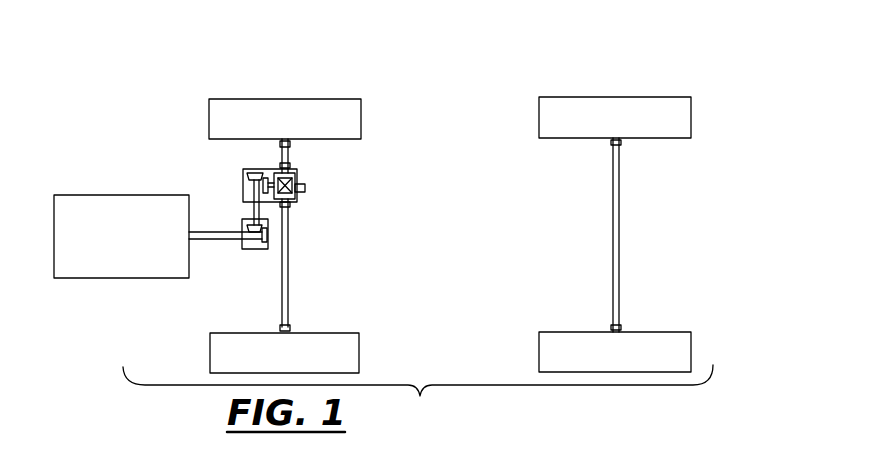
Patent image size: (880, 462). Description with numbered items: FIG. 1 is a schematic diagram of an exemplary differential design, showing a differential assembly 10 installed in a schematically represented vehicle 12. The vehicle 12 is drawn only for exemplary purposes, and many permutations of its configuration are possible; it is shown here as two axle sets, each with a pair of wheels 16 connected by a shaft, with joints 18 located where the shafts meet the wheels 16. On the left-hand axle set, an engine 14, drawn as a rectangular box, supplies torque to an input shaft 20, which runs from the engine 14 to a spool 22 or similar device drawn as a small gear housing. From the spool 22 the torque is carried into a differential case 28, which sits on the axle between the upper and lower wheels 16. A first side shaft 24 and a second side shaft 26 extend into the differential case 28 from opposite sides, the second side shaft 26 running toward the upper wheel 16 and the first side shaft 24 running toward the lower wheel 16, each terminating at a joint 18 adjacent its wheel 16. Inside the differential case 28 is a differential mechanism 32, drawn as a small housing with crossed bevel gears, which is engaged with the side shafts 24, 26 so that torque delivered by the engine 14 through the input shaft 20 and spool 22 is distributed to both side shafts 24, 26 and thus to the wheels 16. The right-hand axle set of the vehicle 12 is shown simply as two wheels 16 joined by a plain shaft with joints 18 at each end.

The differential assembly 10 is at (181, 152).
The vehicle 12 is at (718, 107).
The engine 14 is at (110, 198).
The wheels 16 is at (350, 112).
The joints 18 is at (291, 146).
The input shaft 20 is at (212, 243).
The spool 22 is at (259, 249).
The first side shaft 24 is at (290, 258).
The second side shaft 26 is at (281, 156).
The differential case 28 is at (243, 186).
The differential mechanism 32 is at (306, 189).